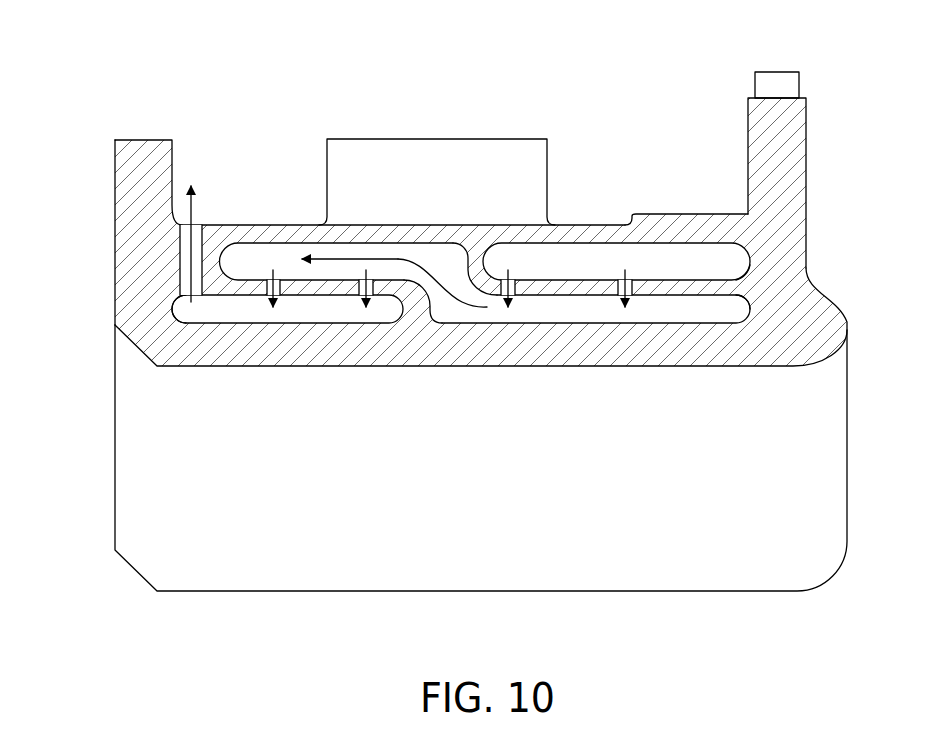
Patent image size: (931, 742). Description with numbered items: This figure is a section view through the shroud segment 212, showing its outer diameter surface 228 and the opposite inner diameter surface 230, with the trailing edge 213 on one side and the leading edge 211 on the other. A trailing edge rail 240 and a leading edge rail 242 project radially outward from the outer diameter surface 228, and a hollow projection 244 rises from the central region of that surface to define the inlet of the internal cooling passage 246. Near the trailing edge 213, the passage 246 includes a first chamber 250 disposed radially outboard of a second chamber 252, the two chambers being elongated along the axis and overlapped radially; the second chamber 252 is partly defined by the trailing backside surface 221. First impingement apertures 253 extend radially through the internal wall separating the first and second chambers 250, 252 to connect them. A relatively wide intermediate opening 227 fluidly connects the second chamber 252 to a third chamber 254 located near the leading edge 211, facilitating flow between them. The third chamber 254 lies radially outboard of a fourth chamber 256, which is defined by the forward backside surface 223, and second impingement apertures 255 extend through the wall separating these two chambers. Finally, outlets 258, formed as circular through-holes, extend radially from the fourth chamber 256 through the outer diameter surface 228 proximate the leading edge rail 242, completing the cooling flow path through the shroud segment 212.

The shroud segment 212 is at (217, 121).
The leading edge 211 is at (117, 230).
The trailing edge 213 is at (807, 170).
The leading edge rail 242 is at (117, 152).
The trailing edge rail 240 is at (798, 133).
The projection 244 is at (548, 165).
The internal cooling passage 246 is at (648, 250).
The outer diameter surface 228 is at (248, 224).
The intermediate opening 227 is at (468, 275).
The third chamber 254 is at (280, 243).
The first chamber 250 is at (760, 262).
The first impingement apertures 253 is at (516, 288).
The second impingement apertures 255 is at (282, 290).
The second chamber 252 is at (752, 302).
The trailing backside surface 221 is at (667, 317).
The forward backside surface 223 is at (338, 317).
The fourth chamber 256 is at (170, 313).
The outlets 258 is at (204, 230).
The inner diameter surface 230 is at (474, 367).